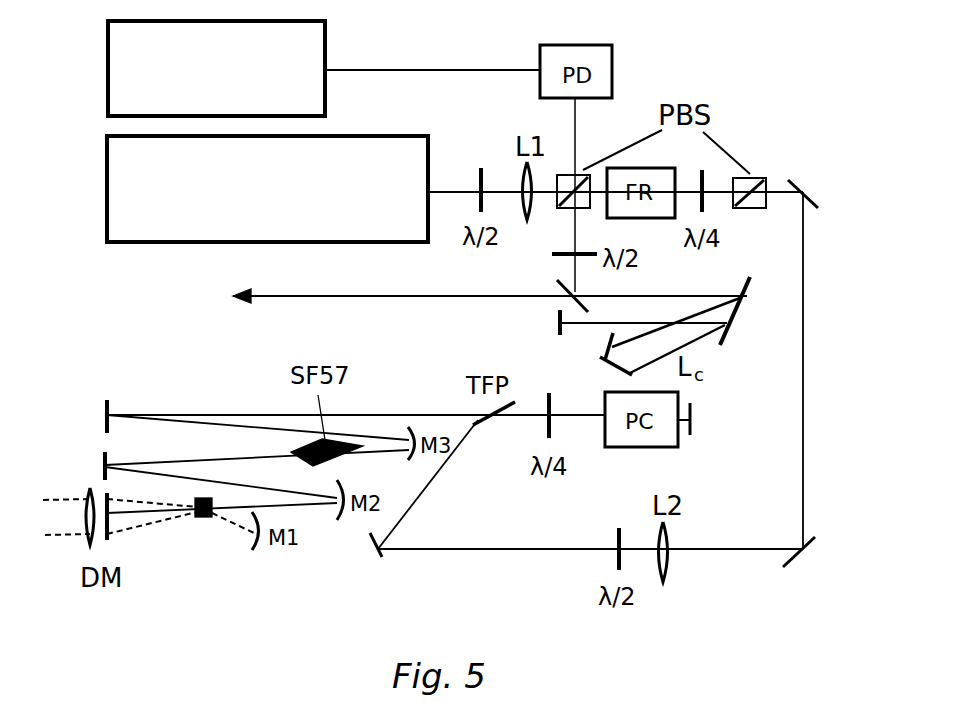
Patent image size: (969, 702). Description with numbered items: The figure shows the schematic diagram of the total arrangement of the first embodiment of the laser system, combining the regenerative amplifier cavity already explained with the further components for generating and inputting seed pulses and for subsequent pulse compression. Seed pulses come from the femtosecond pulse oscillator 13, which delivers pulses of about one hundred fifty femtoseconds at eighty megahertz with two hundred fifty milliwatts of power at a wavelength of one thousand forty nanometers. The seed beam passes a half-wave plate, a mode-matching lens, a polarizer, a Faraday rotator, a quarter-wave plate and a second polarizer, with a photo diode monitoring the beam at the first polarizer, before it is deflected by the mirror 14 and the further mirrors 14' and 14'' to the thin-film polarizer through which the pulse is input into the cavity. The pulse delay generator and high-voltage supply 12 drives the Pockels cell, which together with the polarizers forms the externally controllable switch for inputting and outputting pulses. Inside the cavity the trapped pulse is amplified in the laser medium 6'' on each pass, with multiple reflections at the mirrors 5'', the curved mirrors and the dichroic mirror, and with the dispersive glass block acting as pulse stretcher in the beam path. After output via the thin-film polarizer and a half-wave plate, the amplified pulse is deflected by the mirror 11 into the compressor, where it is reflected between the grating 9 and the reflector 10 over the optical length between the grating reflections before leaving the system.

The pulse delay generator and high-voltage supply 12 is at (181, 68).
The femtosecond pulse oscillator 13 is at (233, 189).
The mirror 14 is at (767, 136).
The mirror 14' is at (747, 578).
The mirror 14'' is at (439, 575).
The mirror 11 is at (624, 290).
The reflector 10 is at (600, 355).
The grating 9 is at (757, 328).
The resonator mirrors 5'' is at (172, 405).
The laser medium 6'' is at (246, 550).